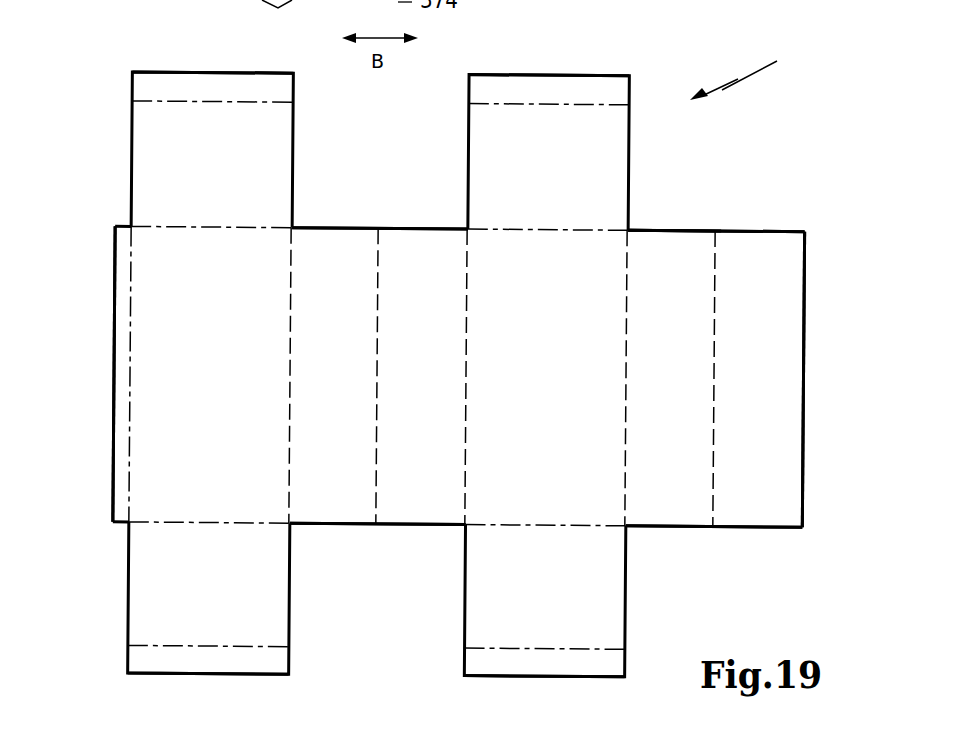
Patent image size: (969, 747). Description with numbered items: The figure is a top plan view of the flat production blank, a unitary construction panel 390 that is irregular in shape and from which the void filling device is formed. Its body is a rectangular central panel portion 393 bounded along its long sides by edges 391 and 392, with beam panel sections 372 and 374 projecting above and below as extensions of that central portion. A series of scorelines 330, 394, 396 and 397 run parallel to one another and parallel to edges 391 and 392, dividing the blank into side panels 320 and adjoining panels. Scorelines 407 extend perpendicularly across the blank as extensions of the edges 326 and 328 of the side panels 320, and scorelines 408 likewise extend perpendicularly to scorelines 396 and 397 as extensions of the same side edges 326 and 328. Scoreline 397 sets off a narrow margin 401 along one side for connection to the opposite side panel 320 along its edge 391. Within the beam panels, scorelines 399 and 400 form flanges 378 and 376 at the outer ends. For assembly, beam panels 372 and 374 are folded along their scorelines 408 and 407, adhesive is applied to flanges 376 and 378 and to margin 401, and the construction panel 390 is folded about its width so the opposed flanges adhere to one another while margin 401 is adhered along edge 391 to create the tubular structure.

The side panel 320 is at (768, 292).
The edge 326 is at (315, 523).
The edge 328 is at (315, 243).
The scoreline 330 is at (377, 414).
The beam panel 372 is at (211, 373).
The beam panel 374 is at (546, 376).
The flange 376 is at (210, 73).
The flange 378 is at (592, 92).
The construction panel 390 is at (756, 72).
The edge 391 is at (497, 105).
The edge 392 is at (115, 318).
The central panel portion 393 is at (655, 230).
The scoreline 394 is at (627, 382).
The scoreline 396 is at (290, 358).
The scoreline 397 is at (130, 345).
The scoreline 399 is at (605, 650).
The scoreline 400 is at (158, 103).
The margin 401 is at (123, 455).
The scoreline 407 is at (500, 230).
The scoreline 408 is at (165, 229).